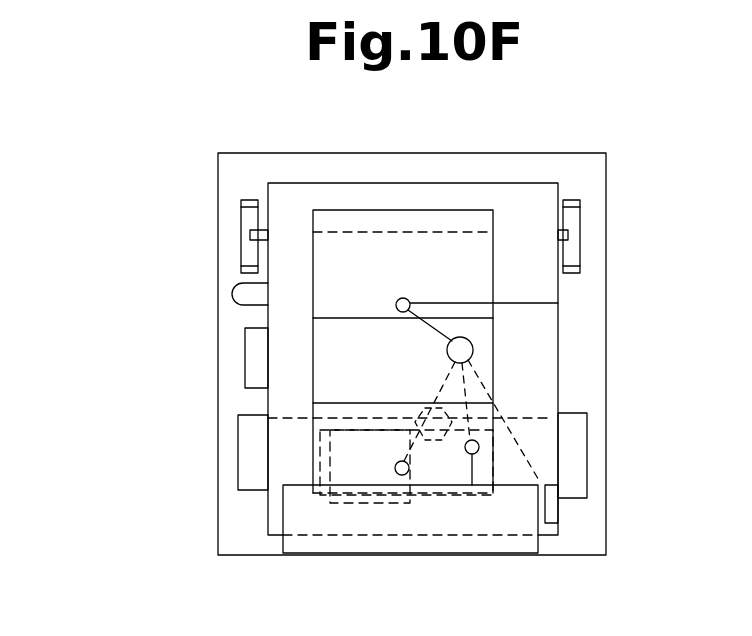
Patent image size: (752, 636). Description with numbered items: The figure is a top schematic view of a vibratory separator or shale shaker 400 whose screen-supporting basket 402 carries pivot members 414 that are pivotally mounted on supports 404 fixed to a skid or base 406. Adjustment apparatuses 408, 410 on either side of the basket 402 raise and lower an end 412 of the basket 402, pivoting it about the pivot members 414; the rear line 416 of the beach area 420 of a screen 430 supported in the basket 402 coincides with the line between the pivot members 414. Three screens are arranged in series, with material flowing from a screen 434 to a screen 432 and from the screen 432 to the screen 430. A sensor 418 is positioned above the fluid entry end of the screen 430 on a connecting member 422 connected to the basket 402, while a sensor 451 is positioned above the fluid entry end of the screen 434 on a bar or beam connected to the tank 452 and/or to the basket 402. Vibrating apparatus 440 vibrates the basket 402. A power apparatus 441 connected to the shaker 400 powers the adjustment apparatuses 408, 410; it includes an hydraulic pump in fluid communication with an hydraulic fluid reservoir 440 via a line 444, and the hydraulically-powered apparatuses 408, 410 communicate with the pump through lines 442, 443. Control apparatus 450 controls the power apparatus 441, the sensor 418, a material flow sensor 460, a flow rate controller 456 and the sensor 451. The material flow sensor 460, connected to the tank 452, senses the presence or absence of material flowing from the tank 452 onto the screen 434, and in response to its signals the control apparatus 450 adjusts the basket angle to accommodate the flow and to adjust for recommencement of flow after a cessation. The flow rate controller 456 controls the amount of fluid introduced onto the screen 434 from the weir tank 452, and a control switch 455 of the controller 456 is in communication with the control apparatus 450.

The vibratory separator 400 is at (200, 250).
The screen-supporting basket 402 is at (265, 315).
The supports 404 is at (248, 200).
The skid 406 is at (243, 380).
The adjustment apparatus 408 is at (247, 467).
The adjustment apparatus 410 is at (577, 435).
The end of the basket 412 is at (283, 525).
The pivot members 414 is at (250, 235).
The rear line 416 is at (438, 232).
The sensor 418 is at (409, 300).
The beach area 420 is at (390, 218).
The connecting member 422 is at (522, 306).
The screen 430 is at (470, 255).
The screen 432 is at (493, 348).
The screen 434 is at (490, 472).
The vibrating apparatus 440 is at (236, 295).
The power apparatus 441 is at (443, 412).
The line 442 is at (520, 420).
The line 443 is at (291, 420).
The line 444 is at (417, 445).
The control apparatus 450 is at (450, 347).
The sensor 451 is at (396, 468).
The tank 452 is at (540, 545).
The control switch 455 is at (557, 495).
The flow rate controller 456 is at (548, 513).
The material flow sensor 460 is at (468, 455).